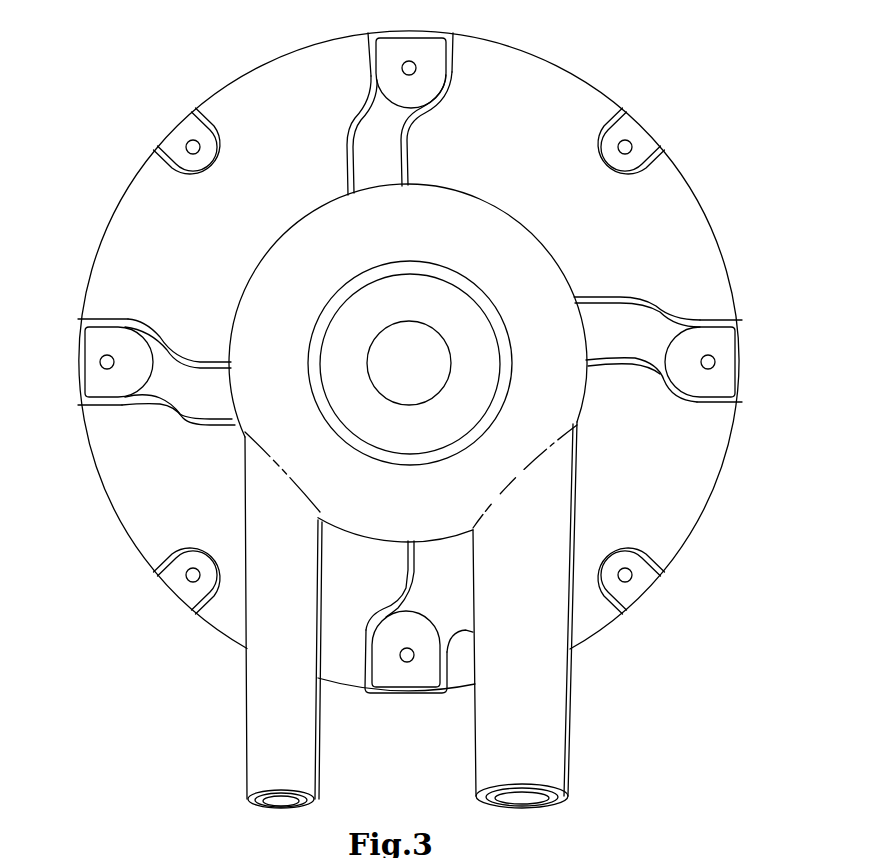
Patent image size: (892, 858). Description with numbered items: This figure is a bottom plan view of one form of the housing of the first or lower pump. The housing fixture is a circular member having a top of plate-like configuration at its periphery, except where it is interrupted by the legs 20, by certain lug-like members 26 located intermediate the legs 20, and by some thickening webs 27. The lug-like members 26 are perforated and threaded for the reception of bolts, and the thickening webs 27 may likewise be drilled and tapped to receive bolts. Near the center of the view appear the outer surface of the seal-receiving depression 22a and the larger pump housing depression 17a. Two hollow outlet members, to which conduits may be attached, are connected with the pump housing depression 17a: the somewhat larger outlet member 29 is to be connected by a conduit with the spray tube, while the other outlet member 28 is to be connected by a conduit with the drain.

The pump housing depression 17a is at (270, 258).
The seal-receiving depression 22a is at (353, 303).
The legs 20 is at (412, 48).
The lug-like members 26 is at (180, 138).
The thickening webs 27 is at (397, 162).
The outlet member 28 is at (255, 733).
The outlet member 29 is at (553, 748).